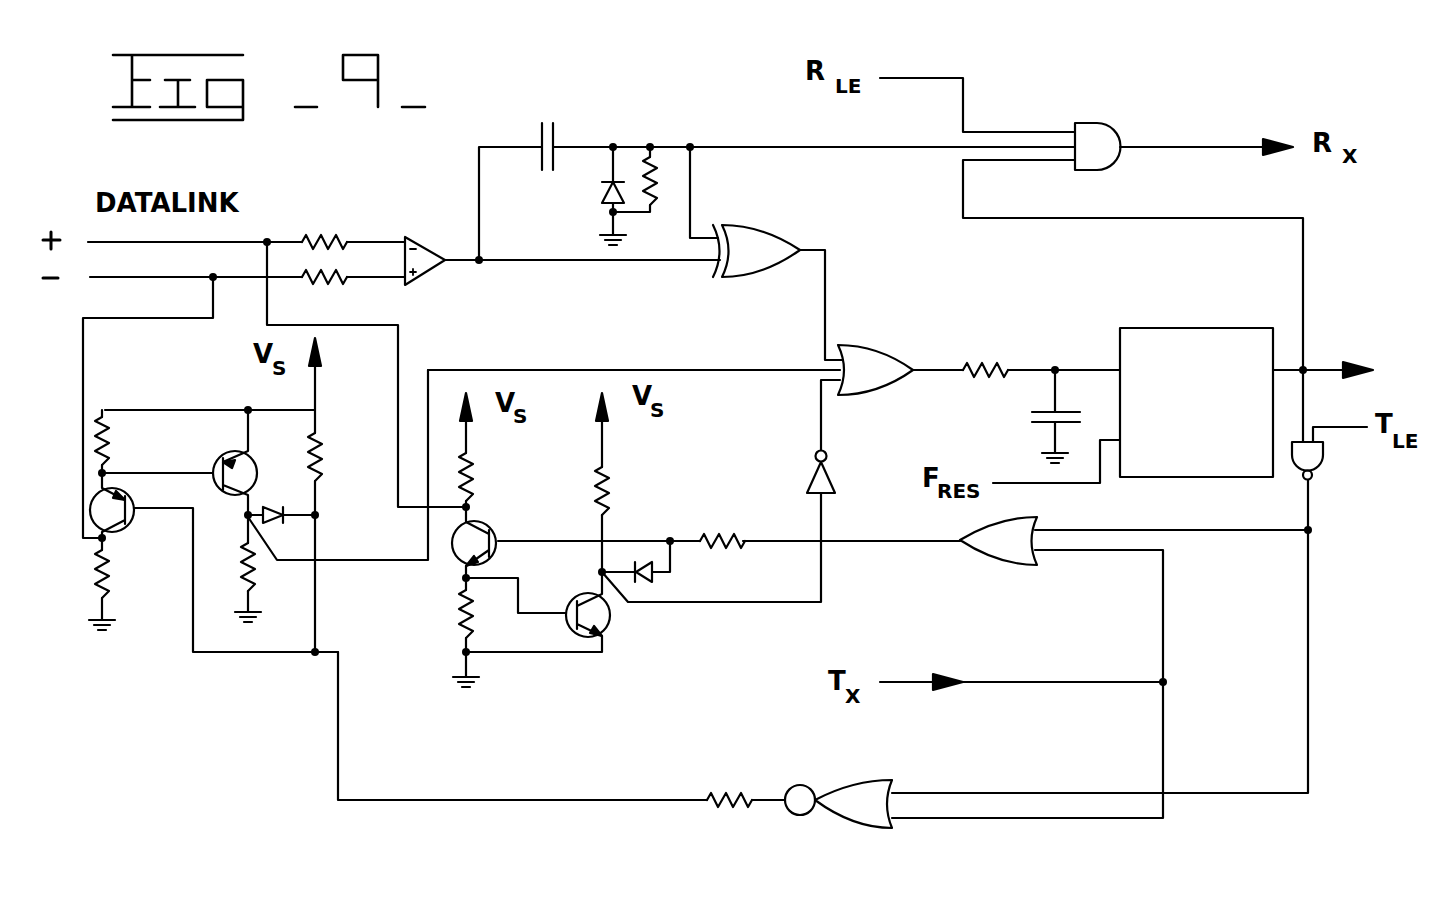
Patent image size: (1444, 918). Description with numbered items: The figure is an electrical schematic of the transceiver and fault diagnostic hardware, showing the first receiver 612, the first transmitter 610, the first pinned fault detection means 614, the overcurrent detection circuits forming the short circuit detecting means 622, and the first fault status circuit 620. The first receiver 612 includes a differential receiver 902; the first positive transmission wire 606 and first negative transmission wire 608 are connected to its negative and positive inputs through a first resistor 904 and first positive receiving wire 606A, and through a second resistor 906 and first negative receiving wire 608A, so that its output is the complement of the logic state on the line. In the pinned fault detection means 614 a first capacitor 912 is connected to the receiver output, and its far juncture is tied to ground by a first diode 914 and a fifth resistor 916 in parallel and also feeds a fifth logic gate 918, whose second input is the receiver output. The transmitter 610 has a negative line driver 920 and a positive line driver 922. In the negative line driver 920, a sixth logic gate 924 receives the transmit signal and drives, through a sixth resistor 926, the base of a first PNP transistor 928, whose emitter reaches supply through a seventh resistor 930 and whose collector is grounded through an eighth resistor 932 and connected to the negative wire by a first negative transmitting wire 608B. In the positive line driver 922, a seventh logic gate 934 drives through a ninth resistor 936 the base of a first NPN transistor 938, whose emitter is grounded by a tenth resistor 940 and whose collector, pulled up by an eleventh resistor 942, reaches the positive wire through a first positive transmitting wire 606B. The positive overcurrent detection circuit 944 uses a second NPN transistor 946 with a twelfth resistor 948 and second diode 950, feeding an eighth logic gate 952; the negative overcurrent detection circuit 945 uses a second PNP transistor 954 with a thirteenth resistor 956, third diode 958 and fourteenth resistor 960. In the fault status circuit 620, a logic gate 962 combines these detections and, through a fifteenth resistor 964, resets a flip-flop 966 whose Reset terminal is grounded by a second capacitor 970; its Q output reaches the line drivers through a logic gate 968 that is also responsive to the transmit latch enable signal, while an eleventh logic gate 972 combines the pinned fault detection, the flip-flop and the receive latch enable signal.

The first positive transmission wire 606 is at (207, 242).
The first negative transmission wire 608 is at (193, 277).
The first positive receiving wire 606A is at (373, 242).
The first negative receiving wire 608A is at (362, 278).
The first positive transmitting wire 606B is at (400, 360).
The first negative transmitting wire 608B is at (138, 320).
The first transmitter 610 is at (108, 672).
The first receiver 612 is at (437, 279).
The first pinned fault detection means 614 is at (595, 120).
The first fault status circuit 620 is at (1045, 343).
The short circuit detecting means 622 is at (490, 714).
The differential receiver 902 is at (453, 235).
The first resistor 904 is at (307, 228).
The second resistor 906 is at (307, 275).
The first capacitor 912 is at (538, 145).
The first diode 914 is at (607, 170).
The fifth resistor 916 is at (673, 130).
The fifth logic gate 918 is at (793, 222).
The negative line driver 920 is at (131, 596).
The positive line driver 922 is at (440, 584).
The sixth logic gate 924 is at (852, 783).
The sixth resistor 926 is at (710, 792).
The first PNP transistor 928 is at (130, 498).
The seventh resistor 930 is at (105, 410).
The eighth resistor 932 is at (115, 552).
The seventh logic gate 934 is at (985, 560).
The ninth resistor 936 is at (708, 535).
The first NPN transistor 938 is at (493, 530).
The tenth resistor 940 is at (475, 602).
The eleventh resistor 942 is at (470, 497).
The positive overcurrent detection circuit 944 is at (662, 662).
The negative overcurrent detection circuit 945 is at (330, 575).
The second NPN transistor 946 is at (612, 618).
The twelfth resistor 948 is at (610, 500).
The second diode 950 is at (672, 567).
The eighth logic gate 952 is at (833, 473).
The second PNP transistor 954 is at (223, 457).
The thirteenth resistor 956 is at (275, 568).
The third diode 958 is at (296, 515).
The fourteenth resistor 960 is at (323, 457).
The logic gate 962 is at (895, 353).
The fifteenth resistor 964 is at (965, 355).
The flip-flop 966 is at (1197, 328).
The logic gate 968 is at (1323, 467).
The second capacitor 970 is at (1052, 397).
The eleventh logic gate 972 is at (1097, 122).